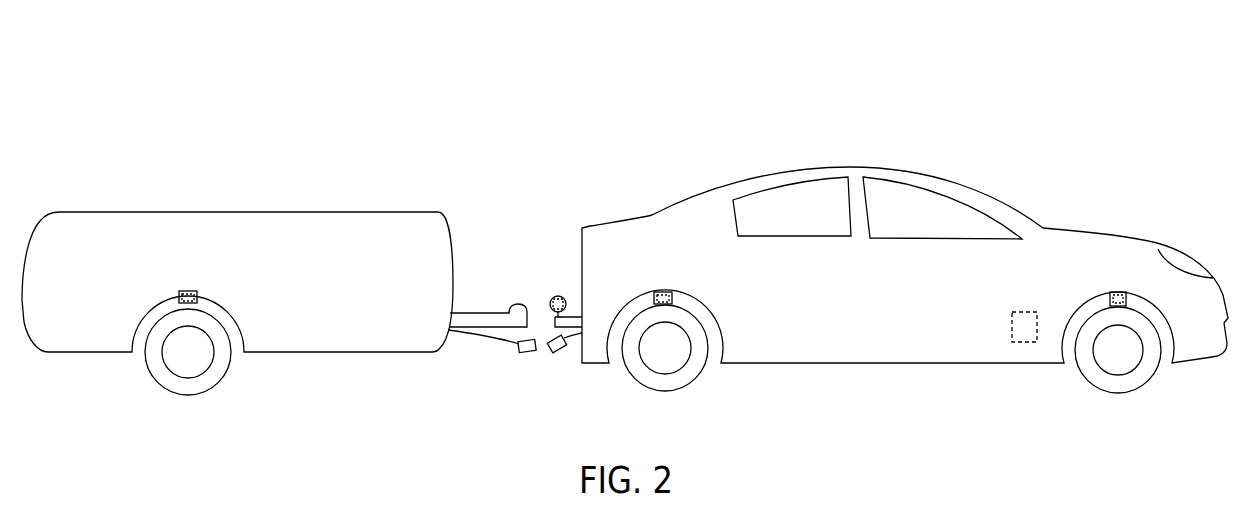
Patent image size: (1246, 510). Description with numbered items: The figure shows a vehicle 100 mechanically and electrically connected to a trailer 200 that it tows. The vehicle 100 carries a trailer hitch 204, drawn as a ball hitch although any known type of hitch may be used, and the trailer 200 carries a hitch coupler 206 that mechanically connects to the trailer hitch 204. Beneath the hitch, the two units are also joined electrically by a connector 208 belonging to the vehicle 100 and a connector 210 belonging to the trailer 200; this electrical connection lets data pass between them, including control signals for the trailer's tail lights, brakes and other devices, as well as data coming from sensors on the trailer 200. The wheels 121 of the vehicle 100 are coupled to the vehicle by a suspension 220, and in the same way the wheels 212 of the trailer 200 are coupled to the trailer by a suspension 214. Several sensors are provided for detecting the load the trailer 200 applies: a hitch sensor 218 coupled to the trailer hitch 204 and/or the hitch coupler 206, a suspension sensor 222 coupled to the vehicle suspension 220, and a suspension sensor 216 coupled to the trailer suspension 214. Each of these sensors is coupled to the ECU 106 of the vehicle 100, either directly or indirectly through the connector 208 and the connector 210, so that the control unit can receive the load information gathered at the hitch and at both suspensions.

The vehicle 100 is at (846, 101).
The ECU 106 is at (1010, 320).
The wheels 121 is at (698, 379).
The trailer 200 is at (258, 145).
The trailer hitch 204 is at (551, 298).
The hitch coupler 206 is at (514, 305).
The connector 208 is at (562, 355).
The connector 210 is at (524, 356).
The wheels 212 is at (218, 385).
The suspension 214 is at (199, 296).
The suspension sensor 216 is at (185, 290).
The hitch sensor 218 is at (559, 295).
The suspension 220 is at (674, 297).
The suspension sensor 222 is at (660, 290).